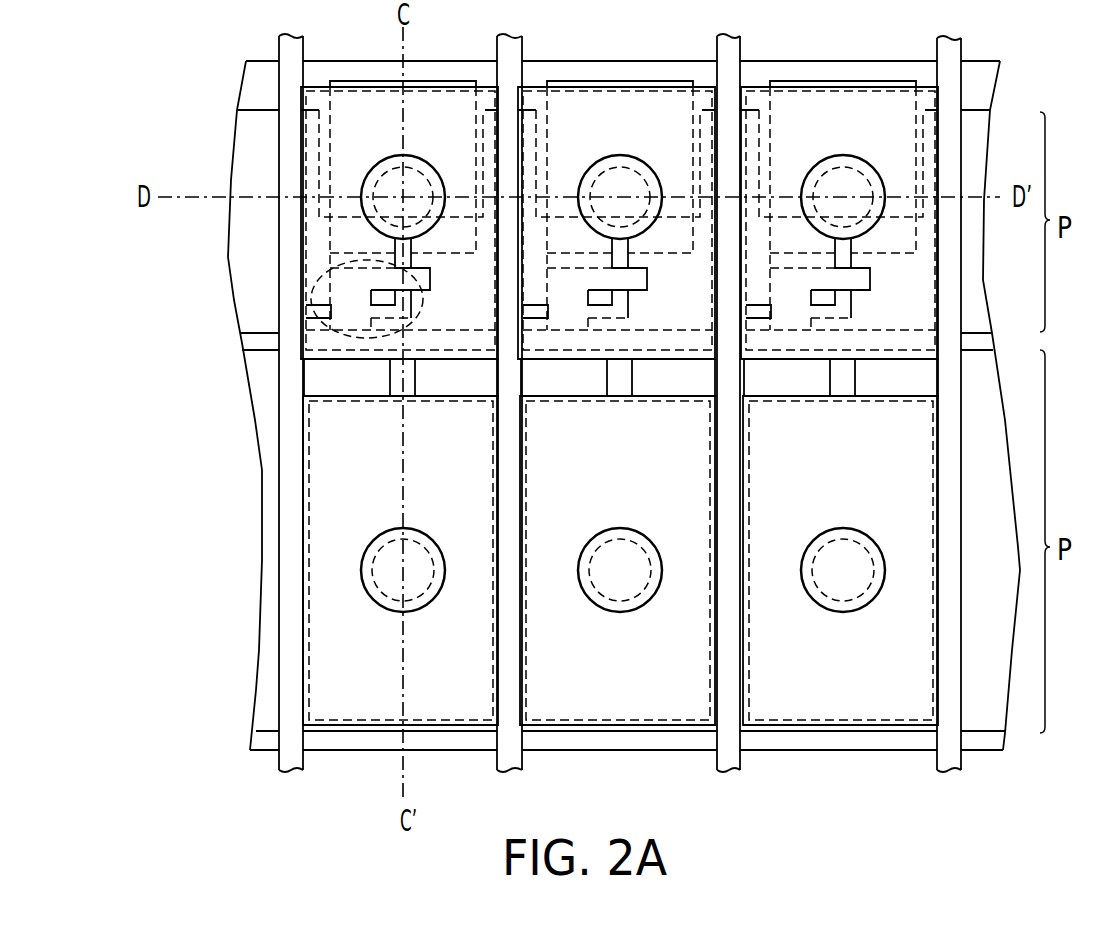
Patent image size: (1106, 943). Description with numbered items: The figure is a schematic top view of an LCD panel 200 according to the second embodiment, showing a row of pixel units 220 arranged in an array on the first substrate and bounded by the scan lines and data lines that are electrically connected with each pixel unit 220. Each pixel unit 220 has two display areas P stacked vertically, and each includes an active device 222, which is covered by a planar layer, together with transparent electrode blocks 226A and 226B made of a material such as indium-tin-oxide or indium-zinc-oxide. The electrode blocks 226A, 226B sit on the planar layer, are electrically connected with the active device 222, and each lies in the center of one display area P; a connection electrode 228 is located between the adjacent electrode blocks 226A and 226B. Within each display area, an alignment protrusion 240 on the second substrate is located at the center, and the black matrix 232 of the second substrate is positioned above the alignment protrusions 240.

The LCD panel 200 is at (1047, 817).
The pixel unit 220 is at (140, 222).
The active device 222 is at (312, 292).
The electrode block 226A is at (316, 243).
The electrode block 226B is at (327, 450).
The connection electrode 228 is at (395, 373).
The black matrix 232 is at (364, 184).
The alignment protrusion 240 is at (376, 205).